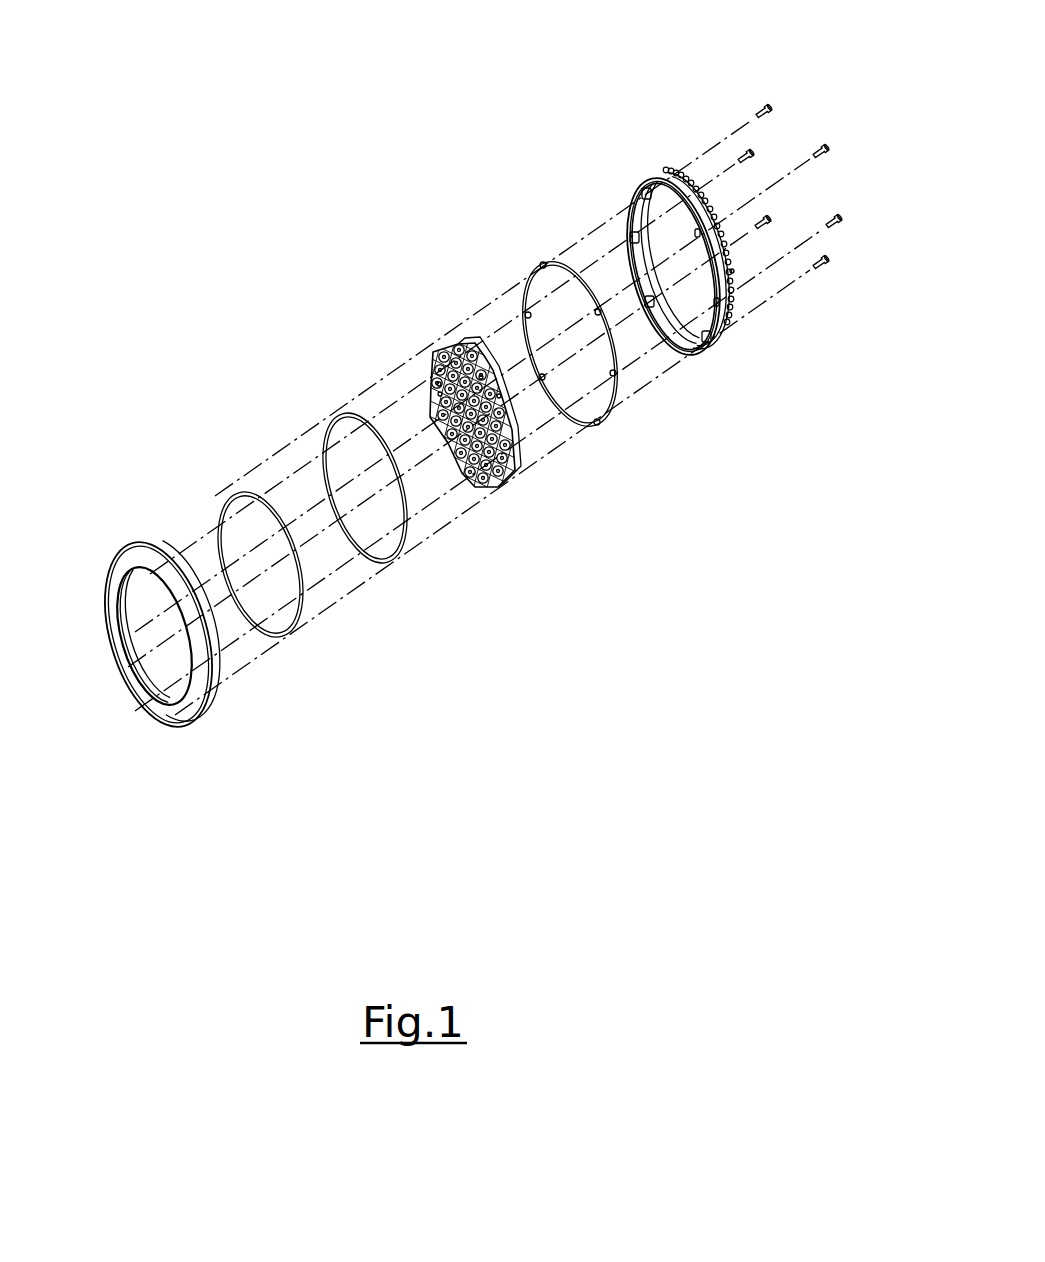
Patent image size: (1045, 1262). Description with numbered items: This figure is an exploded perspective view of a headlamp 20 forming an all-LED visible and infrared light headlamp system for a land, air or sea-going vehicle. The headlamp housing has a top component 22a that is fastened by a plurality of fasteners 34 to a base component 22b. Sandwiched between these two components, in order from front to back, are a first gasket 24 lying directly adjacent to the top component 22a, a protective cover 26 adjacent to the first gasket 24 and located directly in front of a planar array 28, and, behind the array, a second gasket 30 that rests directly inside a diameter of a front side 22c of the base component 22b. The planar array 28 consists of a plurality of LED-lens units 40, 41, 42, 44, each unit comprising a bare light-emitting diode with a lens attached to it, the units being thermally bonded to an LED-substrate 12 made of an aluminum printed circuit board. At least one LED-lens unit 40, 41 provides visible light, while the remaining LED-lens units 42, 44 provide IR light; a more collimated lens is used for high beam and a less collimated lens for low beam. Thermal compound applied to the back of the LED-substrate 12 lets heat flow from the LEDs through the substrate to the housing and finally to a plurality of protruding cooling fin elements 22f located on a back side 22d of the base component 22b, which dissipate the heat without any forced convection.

The LED-substrate 12 is at (505, 482).
The headlamp 20 is at (195, 877).
The top component 22a is at (128, 547).
The base component 22b is at (647, 183).
The front side 22c is at (688, 355).
The back side 22d is at (733, 327).
The protruding cooling fin elements 22f is at (733, 272).
The first gasket 24 is at (290, 627).
The protective cover 26 is at (323, 420).
The planar array 28 is at (432, 358).
The second gasket 30 is at (605, 424).
The fasteners 34 is at (772, 102).
The LED-lens unit 40 is at (482, 378).
The LED-lens unit 41 is at (500, 397).
The LED-lens unit 42 is at (432, 386).
The LED-lens unit 44 is at (433, 394).